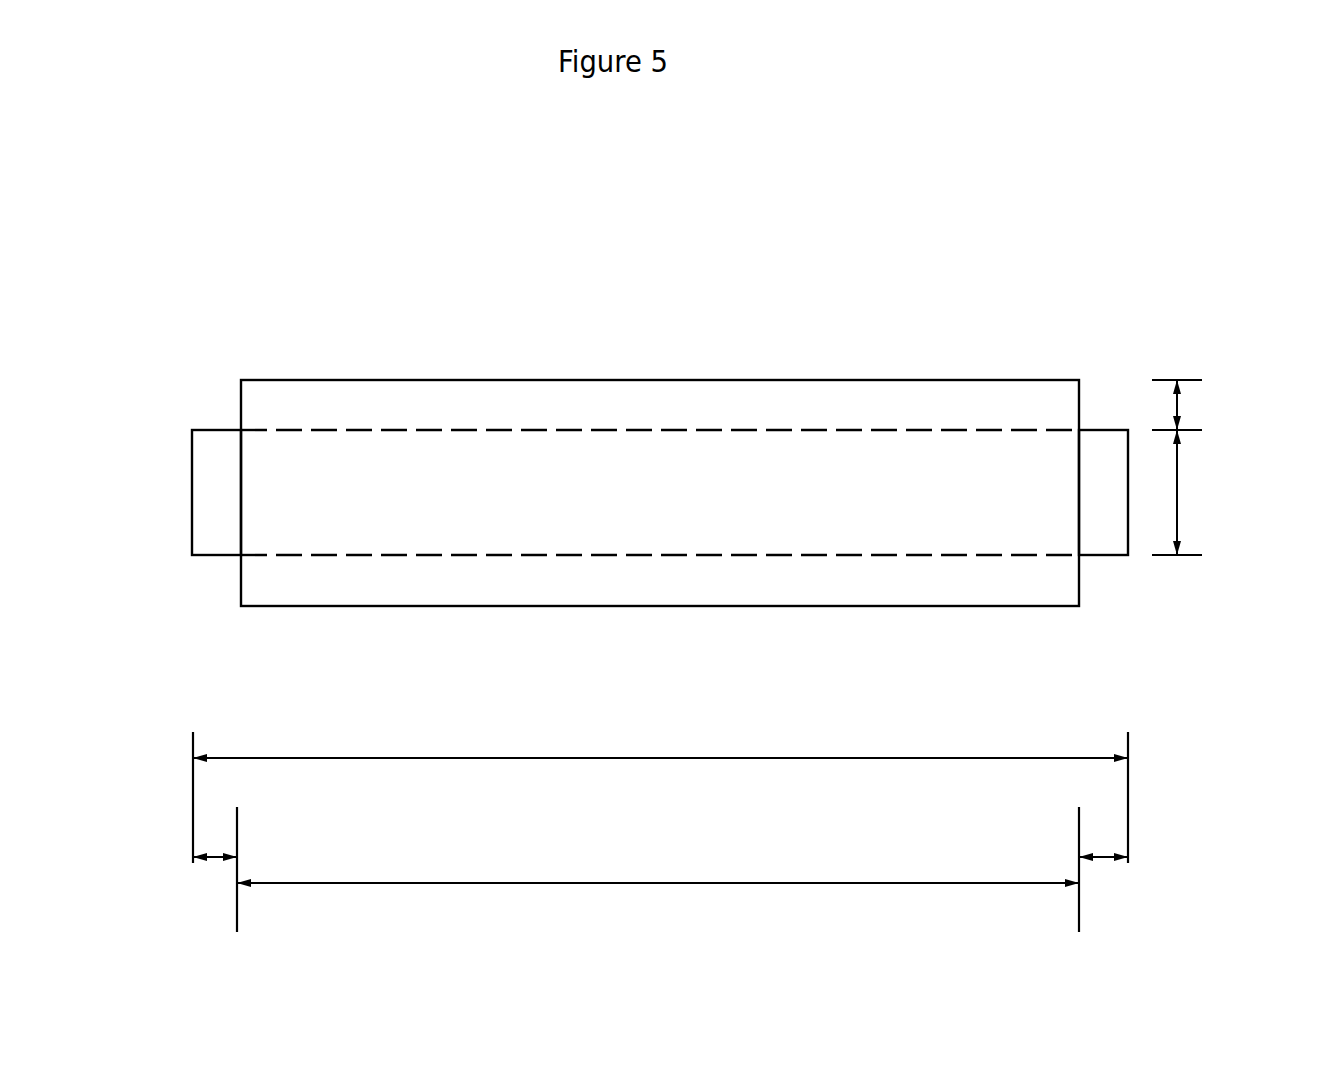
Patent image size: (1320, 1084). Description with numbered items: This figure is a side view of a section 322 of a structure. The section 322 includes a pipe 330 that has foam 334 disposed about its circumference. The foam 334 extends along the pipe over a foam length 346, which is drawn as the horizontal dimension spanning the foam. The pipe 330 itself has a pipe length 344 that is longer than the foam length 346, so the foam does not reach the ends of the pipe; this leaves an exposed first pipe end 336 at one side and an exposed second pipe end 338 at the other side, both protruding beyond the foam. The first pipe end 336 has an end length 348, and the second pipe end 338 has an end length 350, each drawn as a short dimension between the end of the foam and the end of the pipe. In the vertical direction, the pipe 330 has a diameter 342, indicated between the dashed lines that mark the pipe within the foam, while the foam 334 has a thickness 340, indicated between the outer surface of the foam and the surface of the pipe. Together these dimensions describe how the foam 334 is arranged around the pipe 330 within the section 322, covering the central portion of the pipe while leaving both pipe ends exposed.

The section 322 is at (292, 345).
The pipe 330 is at (378, 430).
The foam 334 is at (623, 380).
The first pipe end 336 is at (217, 555).
The second pipe end 338 is at (1105, 555).
The thickness 340 is at (1205, 405).
The diameter 342 is at (1205, 492).
The pipe length 344 is at (660, 791).
The foam length 346 is at (658, 869).
The end length 348 is at (213, 876).
The end length 350 is at (1103, 877).